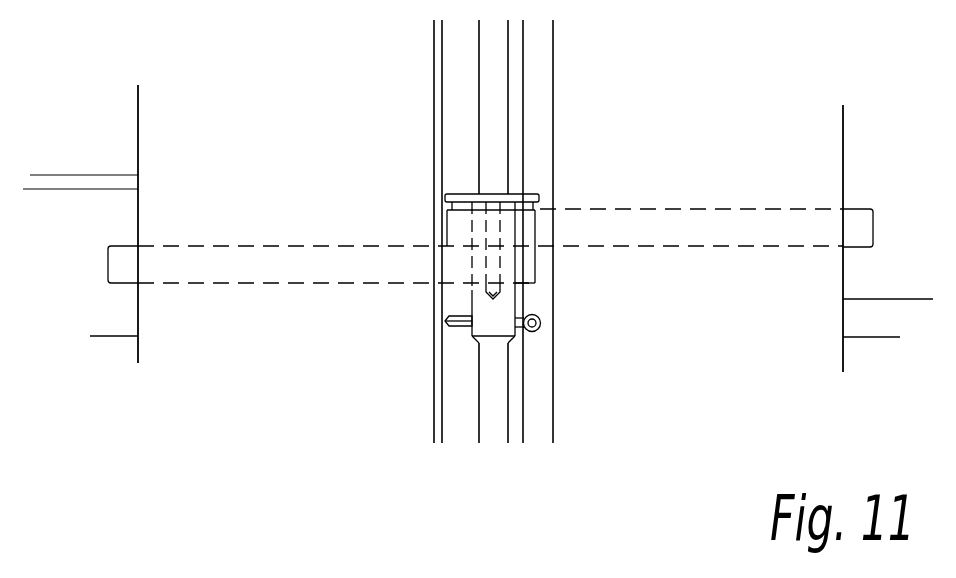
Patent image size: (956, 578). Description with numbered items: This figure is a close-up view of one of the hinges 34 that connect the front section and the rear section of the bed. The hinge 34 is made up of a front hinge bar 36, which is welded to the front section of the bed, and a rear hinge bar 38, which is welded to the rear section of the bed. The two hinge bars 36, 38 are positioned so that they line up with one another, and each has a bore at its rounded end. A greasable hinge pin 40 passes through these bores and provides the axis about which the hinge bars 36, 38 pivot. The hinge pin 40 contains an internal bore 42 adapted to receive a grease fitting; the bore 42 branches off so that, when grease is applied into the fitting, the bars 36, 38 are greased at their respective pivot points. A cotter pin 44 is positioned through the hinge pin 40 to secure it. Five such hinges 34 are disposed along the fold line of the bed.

The hinge 34 is at (278, 128).
The front hinge bar 36 is at (635, 212).
The rear hinge bar 38 is at (278, 275).
The greasable hinge pin 40 is at (452, 182).
The internal bore 42 is at (490, 192).
The cotter pin 44 is at (537, 348).